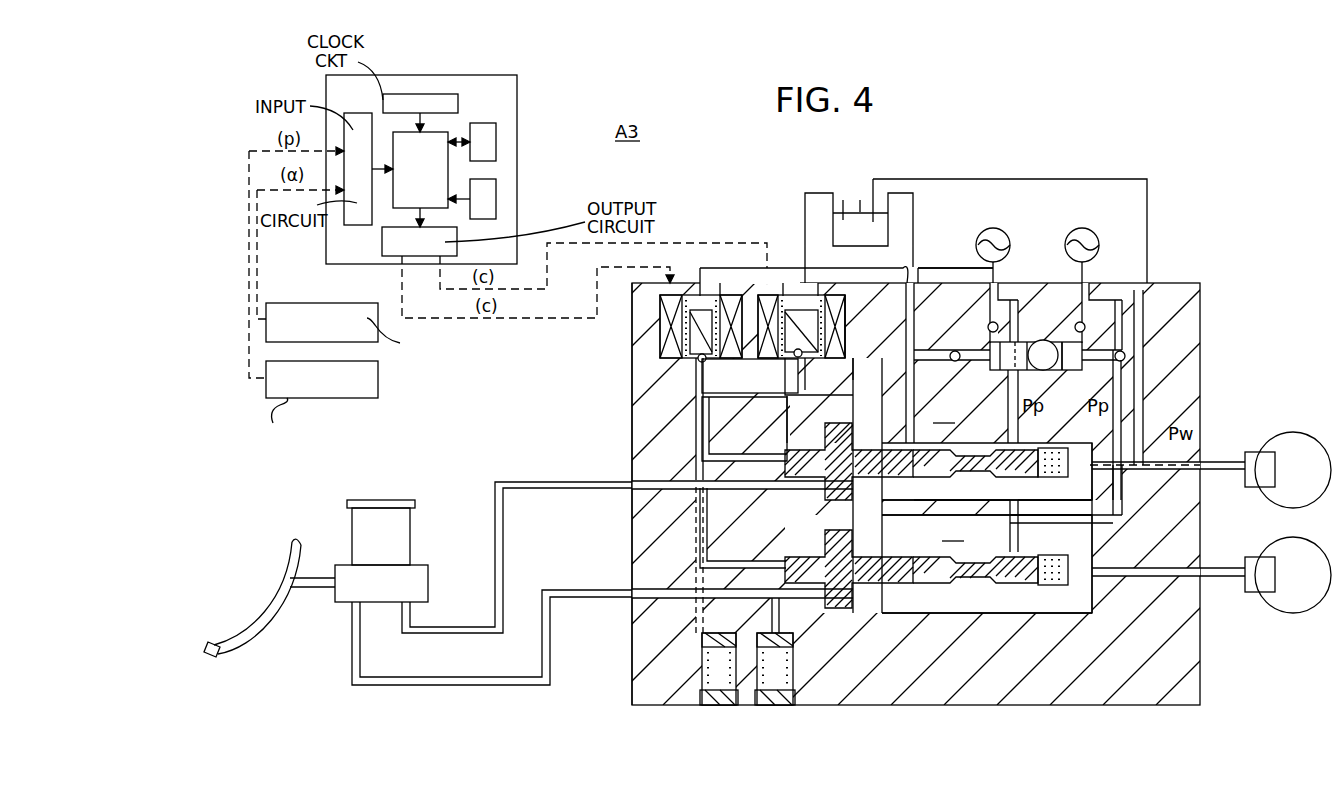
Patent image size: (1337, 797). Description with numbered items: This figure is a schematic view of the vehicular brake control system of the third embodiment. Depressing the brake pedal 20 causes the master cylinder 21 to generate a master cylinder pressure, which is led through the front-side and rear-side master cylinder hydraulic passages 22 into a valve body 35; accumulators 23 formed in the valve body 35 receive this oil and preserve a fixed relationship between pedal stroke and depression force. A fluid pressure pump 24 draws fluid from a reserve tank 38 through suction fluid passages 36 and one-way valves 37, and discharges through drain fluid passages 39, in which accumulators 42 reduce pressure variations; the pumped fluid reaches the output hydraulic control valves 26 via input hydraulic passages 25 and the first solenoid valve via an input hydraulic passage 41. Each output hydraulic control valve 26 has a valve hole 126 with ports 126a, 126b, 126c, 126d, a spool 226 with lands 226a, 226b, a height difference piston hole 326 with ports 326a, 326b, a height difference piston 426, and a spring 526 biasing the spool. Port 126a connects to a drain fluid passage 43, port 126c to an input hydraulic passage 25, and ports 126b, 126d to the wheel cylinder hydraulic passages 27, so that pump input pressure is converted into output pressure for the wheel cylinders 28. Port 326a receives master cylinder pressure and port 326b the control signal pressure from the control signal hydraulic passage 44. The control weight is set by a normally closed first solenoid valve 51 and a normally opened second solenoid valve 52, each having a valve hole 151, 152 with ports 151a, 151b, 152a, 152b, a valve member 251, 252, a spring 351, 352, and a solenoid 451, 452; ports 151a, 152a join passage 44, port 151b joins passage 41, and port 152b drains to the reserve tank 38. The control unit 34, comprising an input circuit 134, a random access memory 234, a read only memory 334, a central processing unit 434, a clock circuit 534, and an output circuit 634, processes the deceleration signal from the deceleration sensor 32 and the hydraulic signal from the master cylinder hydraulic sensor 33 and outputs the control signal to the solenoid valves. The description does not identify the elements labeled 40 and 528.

The brake pedal 20 is at (210, 640).
The master cylinder 21 is at (440, 566).
The master cylinder hydraulic passage 22 is at (576, 480).
The accumulator 23 is at (712, 700).
The fluid pressure pump 24 is at (1040, 340).
The input hydraulic passage 25 is at (1110, 382).
The output hydraulic control valve 26 is at (987, 508).
The wheel cylinder hydraulic passage 27 is at (1225, 460).
The wheel cylinder 28 is at (1250, 452).
The deceleration sensor 32 is at (343, 303).
The master cylinder hydraulic sensor 33 is at (380, 380).
The control unit 34 is at (520, 98).
The valve body 35 is at (898, 710).
The suction fluid passage 36 is at (950, 355).
The one-way valve 37 is at (1130, 345).
The reserve tank 38 is at (860, 248).
The drain fluid passage 39 is at (985, 312).
The check valve 40 is at (988, 328).
The input hydraulic passage 41 is at (948, 268).
The accumulator 42 is at (1008, 212).
The drain fluid passage 43 is at (1143, 378).
The control signal hydraulic passage 44 is at (703, 432).
The first solenoid valve 51 is at (670, 295).
The second solenoid valve 52 is at (777, 294).
The valve hole 126 is at (950, 430).
The port 126a is at (903, 440).
The port 126b is at (950, 490).
The port 126c is at (1022, 445).
The port 126d is at (1190, 470).
The input circuit 134 is at (366, 114).
The valve hole 151 is at (702, 300).
The port 151a is at (696, 390).
The port 151b is at (708, 310).
The valve hole 152 is at (836, 320).
The port 152a is at (828, 408).
The port 152b is at (803, 286).
The spool 226 is at (988, 445).
The land 226a is at (898, 470).
The land 226b is at (1135, 500).
The RAM 234 is at (480, 122).
The valve member 251 is at (712, 365).
The valve member 252 is at (797, 330).
The height difference piston hole 326 is at (855, 535).
The port 326a is at (812, 490).
The port 326b is at (770, 553).
The ROM 334 is at (493, 220).
The spring 351 is at (760, 380).
The spring 352 is at (822, 365).
The height difference piston 426 is at (827, 440).
The CPU 434 is at (448, 132).
The solenoid 451 is at (690, 360).
The solenoid 452 is at (818, 375).
The spring 526 is at (1068, 462).
The spring 528 is at (1080, 575).
The clock circuit 534 is at (400, 100).
The output circuit 634 is at (380, 250).